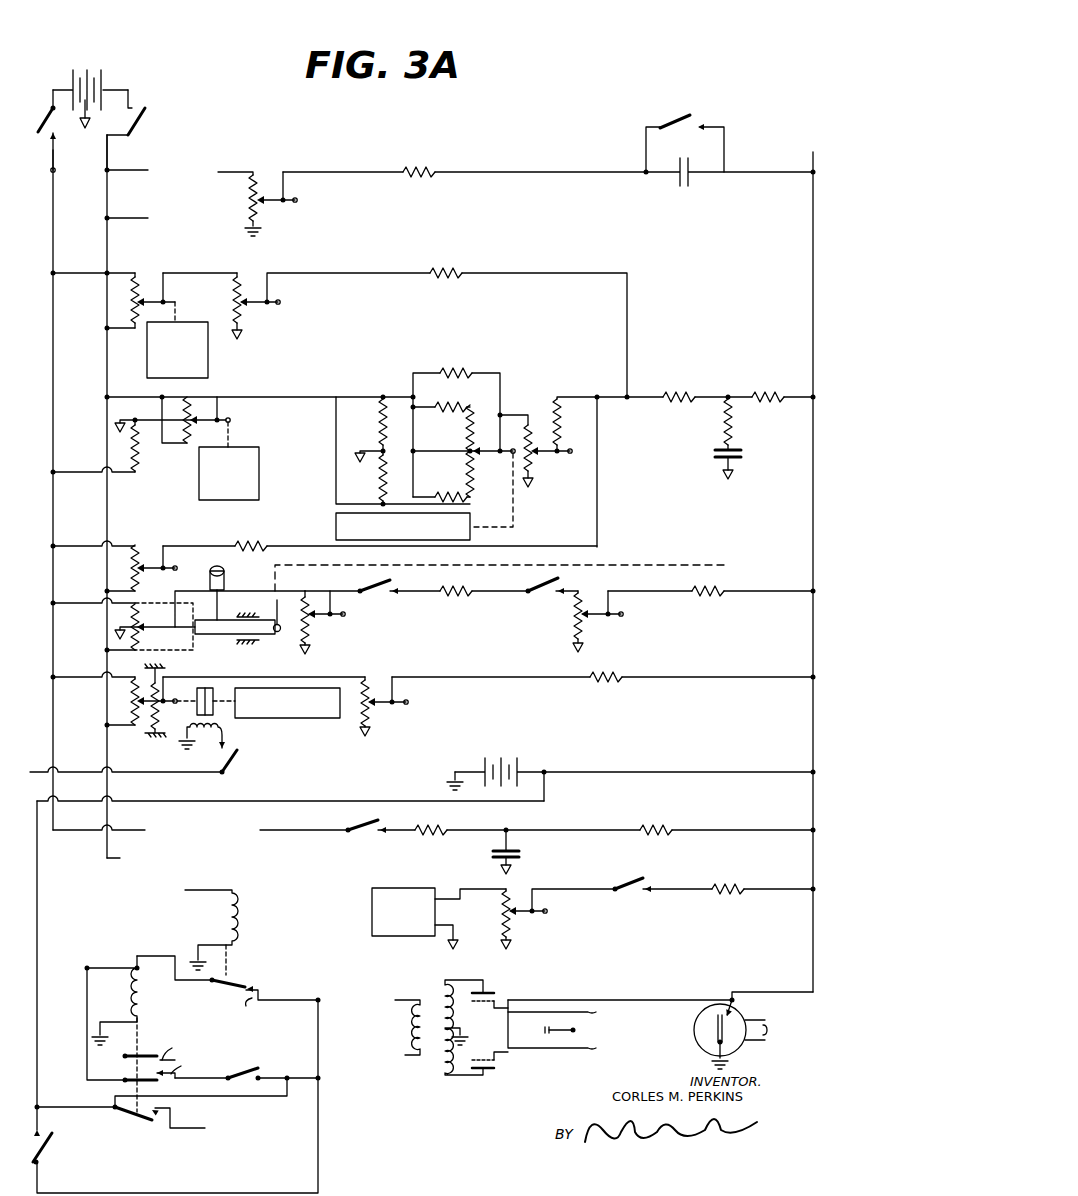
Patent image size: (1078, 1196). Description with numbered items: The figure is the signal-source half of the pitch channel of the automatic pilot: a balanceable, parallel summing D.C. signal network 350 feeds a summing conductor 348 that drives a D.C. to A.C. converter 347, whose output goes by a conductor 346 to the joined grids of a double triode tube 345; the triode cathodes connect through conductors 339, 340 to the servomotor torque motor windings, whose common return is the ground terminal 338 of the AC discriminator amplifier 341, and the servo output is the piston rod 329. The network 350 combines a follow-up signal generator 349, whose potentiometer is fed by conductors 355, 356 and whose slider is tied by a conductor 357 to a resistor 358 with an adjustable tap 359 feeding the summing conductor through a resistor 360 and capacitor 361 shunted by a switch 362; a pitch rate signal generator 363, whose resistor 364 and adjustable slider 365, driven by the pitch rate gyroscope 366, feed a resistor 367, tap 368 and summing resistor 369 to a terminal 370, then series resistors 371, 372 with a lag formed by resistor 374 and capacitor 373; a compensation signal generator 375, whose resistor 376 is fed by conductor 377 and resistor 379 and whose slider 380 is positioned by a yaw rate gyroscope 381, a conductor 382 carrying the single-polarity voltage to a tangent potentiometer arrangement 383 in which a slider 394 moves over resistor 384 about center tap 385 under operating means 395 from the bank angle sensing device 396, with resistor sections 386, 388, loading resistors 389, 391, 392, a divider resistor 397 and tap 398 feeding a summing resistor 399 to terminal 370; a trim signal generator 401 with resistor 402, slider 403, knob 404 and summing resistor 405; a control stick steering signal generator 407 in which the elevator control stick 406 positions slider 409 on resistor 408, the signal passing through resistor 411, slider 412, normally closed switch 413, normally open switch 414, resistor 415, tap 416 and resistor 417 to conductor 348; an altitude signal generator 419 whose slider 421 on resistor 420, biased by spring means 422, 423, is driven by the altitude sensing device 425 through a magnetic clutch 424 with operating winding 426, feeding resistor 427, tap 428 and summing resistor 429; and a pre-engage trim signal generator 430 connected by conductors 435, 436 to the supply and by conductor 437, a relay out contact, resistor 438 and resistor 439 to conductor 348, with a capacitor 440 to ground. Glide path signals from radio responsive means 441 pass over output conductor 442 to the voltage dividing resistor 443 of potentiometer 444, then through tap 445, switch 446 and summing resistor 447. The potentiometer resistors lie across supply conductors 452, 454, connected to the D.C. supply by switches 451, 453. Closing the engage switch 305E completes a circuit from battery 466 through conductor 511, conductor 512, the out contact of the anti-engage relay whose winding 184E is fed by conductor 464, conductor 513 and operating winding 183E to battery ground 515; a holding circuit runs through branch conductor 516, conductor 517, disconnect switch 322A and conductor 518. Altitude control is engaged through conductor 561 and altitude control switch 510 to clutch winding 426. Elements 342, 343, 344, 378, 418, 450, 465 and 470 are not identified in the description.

The engage switch 305E is at (52, 1140).
The disconnect switch 322A is at (225, 1068).
The piston rod 329 is at (632, 564).
The ground terminal 338 is at (576, 1030).
The conductor 339 is at (571, 1015).
The conductor 340 is at (571, 1029).
The AC discriminator amplifier 341 is at (540, 1037).
The transformer 342 is at (427, 994).
The primary winding 343 is at (410, 1060).
The secondary winding 344 is at (468, 1078).
The double triode tube 345 is at (488, 1030).
The conductor 346 is at (583, 1000).
The D.C. to A.C. converter 347 is at (701, 1058).
The summing conductor 348 is at (812, 250).
The follow-up signal generator 349 is at (97, 216).
The balanceable D.C. signal network 350 is at (744, 623).
The conductor 355 is at (148, 170).
The conductor 356 is at (148, 218).
The conductor 357 is at (240, 162).
The resistor 358 is at (246, 200).
The adjustable tap 359 is at (280, 202).
The resistor 360 is at (403, 172).
The capacitor 361 is at (690, 182).
The single pole single throw switch 362 is at (676, 122).
The pitch rate signal generator 363 is at (99, 303).
The resistor 364 is at (130, 322).
The adjustable slider 365 is at (156, 280).
The pitch rate gyroscope 366 is at (208, 358).
The resistor 367 is at (246, 277).
The adjustable tap 368 is at (275, 304).
The summing resistor 369 is at (441, 273).
The terminal 370 is at (615, 396).
The resistor 371 is at (668, 396).
The resistor 372 is at (747, 394).
The capacitor 373 is at (708, 450).
The resistor 374 is at (734, 432).
The compensation signal generator 375 is at (108, 426).
The resistor 376 is at (199, 402).
The conductor 377 is at (134, 396).
The lead 378 is at (144, 419).
The resistor 379 is at (140, 460).
The slider 380 is at (232, 418).
The yaw rate gyroscope 381 is at (259, 462).
The conductor 382 is at (269, 397).
The tangent potentiometer arrangement 383 is at (485, 356).
The resistor 384 is at (472, 404).
The center tap 385 is at (453, 456).
The resistor section 386 is at (380, 424).
The resistor section 388 is at (380, 482).
The loading resistor 389 is at (442, 370).
The loading resistor 391 is at (458, 396).
The loading resistor 392 is at (457, 498).
The adjustable slider 394 is at (464, 458).
The operating means 395 is at (474, 528).
The bank angle sensing device 396 is at (336, 523).
The resistor 397 is at (532, 476).
The adjustable tap 398 is at (536, 451).
The summing resistor 399 is at (548, 416).
The trim signal generator 401 is at (97, 585).
The resistor 402 is at (127, 566).
The adjustable slider 403 is at (163, 570).
The knob 404 is at (174, 568).
The summing resistor 405 is at (238, 545).
The elevator control stick 406 is at (224, 573).
The control stick steering signal generator 407 is at (97, 643).
The resistor 408 is at (149, 628).
The adjustable slider 409 is at (146, 633).
The resistor 411 is at (295, 640).
The adjustable slider 412 is at (332, 618).
The switch 413 is at (360, 591).
The switch 414 is at (558, 595).
The resistor 415 is at (572, 622).
The adjustable tap 416 is at (607, 614).
The resistor 417 is at (725, 591).
The lever mechanism 418 is at (208, 648).
The altitude signal generator 419 is at (97, 715).
The resistor 420 is at (125, 687).
The slider 421 is at (140, 724).
The spring means 422 is at (152, 671).
The spring means 423 is at (163, 725).
The magnetic clutch 424 is at (264, 696).
The altitude sensing device 425 is at (255, 716).
The operating winding 426 is at (208, 740).
The resistor 427 is at (361, 716).
The adjustable tap 428 is at (374, 704).
The summing resistor 429 is at (579, 676).
The pre-engage trim signal generator 430 is at (157, 853).
The conductor 435 is at (124, 828).
The conductor 436 is at (118, 858).
The conductor 437 is at (282, 832).
The resistor 438 is at (440, 828).
The resistor 439 is at (640, 831).
The capacitor 440 is at (519, 855).
The radio responsive means 441 is at (413, 888).
The output conductor 442 is at (445, 892).
The voltage dividing resistor 443 is at (501, 915).
The voltage dividing potentiometer 444 is at (523, 925).
The adjustable tap 445 is at (573, 901).
The switch 446 is at (626, 882).
The summing resistor 447 is at (714, 888).
The battery 450 is at (81, 62).
The switch 451 is at (138, 106).
The supply conductor 452 is at (110, 146).
The switch 453 is at (40, 115).
The supply conductor 454 is at (45, 160).
The conductor 464 is at (644, 772).
The relay 465 is at (187, 890).
The battery 466 is at (506, 756).
The lead 470 is at (177, 1128).
The altitude control switch 510 is at (235, 758).
The conductor 511 is at (184, 803).
The conductor 512 is at (156, 1192).
The conductor 513 is at (170, 954).
The battery ground 515 is at (456, 770).
The branch conductor 516 is at (78, 1105).
The conductor 517 is at (253, 1096).
The conductor 518 is at (87, 1012).
The conductor 561 is at (90, 774).
The operating winding 183E is at (146, 995).
The operating winding 184E is at (220, 908).